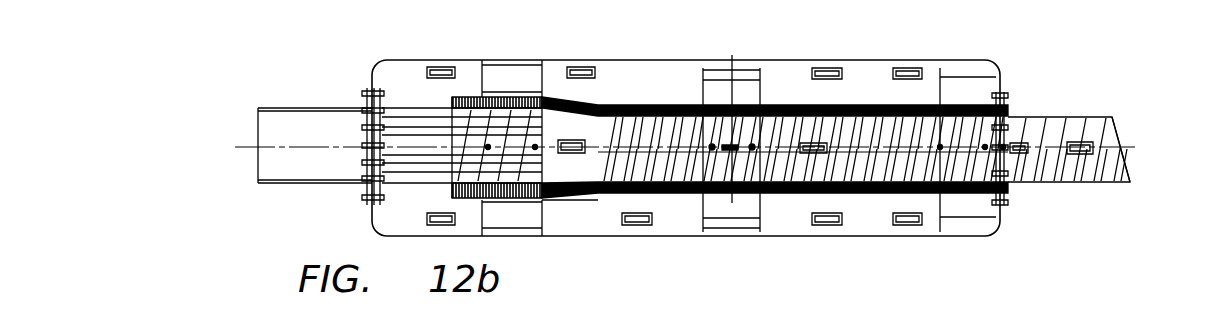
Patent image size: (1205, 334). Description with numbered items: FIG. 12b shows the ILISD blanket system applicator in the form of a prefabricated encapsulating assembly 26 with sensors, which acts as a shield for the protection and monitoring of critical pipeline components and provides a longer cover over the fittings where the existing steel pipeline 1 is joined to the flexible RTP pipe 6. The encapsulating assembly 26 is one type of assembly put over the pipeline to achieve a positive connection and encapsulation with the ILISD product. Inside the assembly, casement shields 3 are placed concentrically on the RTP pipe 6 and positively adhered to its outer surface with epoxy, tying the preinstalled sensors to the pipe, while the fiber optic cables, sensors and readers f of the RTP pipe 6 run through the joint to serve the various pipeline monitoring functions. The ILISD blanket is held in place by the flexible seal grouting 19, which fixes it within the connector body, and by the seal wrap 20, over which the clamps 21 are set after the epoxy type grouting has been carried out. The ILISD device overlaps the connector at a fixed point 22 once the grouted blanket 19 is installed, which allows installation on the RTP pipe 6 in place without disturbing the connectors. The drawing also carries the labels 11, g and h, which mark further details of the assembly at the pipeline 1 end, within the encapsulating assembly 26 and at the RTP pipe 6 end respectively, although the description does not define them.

The steel pipeline 1 is at (283, 108).
The flange 11 is at (368, 203).
The prefabricated encapsulating assembly 26 is at (372, 75).
The fixed point 22 is at (520, 100).
The flexible seal grouting 19 is at (877, 103).
The seal wrap 20 is at (700, 187).
The casement shield 3 is at (960, 100).
The fiber optic cables, sensors and readers f is at (723, 177).
The clips g is at (812, 68).
The clamp 21 is at (962, 195).
The flexible RTP pipe 6 is at (1047, 117).
The slanted end h is at (1110, 183).